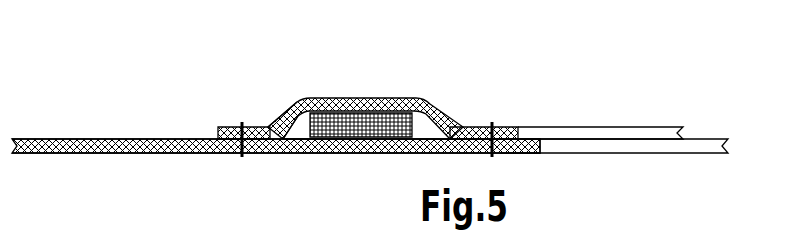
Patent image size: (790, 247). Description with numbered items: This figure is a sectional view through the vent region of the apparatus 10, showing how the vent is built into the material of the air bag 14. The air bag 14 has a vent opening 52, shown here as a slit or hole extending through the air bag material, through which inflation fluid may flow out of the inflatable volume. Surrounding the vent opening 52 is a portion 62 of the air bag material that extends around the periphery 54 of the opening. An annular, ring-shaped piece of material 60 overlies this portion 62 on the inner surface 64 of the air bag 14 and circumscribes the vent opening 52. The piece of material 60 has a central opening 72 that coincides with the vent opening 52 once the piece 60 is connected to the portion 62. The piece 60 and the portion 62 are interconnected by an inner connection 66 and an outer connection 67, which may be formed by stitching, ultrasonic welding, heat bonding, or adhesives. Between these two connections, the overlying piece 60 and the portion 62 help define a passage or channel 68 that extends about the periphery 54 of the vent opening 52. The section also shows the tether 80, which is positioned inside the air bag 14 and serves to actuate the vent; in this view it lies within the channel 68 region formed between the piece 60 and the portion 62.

The apparatus 10 is at (232, 55).
The air bag 14 is at (52, 139).
The vent opening 52 is at (640, 152).
The periphery 54 is at (540, 146).
The piece of material 60 is at (327, 99).
The portion of the air bag material 62 is at (352, 141).
The inner surface 64 is at (185, 136).
The inner connection 66 is at (493, 126).
The outer connection 67 is at (240, 158).
The passage or channel 68 is at (298, 128).
The central opening 72 is at (606, 129).
The tether 80 is at (378, 118).